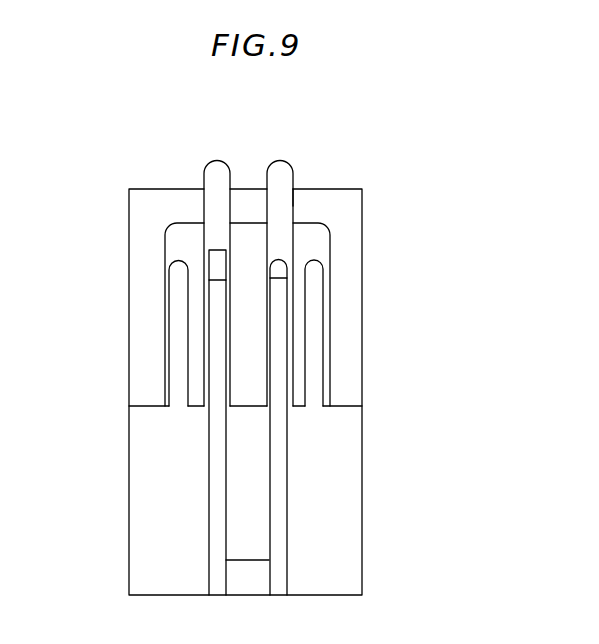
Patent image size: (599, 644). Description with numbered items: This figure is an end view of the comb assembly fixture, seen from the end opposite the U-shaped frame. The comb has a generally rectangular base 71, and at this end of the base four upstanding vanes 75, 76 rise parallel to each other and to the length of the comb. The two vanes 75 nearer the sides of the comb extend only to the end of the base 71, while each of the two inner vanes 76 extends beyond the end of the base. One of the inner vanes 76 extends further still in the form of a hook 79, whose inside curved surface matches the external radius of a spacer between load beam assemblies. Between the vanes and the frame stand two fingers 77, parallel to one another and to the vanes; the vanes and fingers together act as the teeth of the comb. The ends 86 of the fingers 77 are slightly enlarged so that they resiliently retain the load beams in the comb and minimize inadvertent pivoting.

The base 71 is at (128, 547).
The fingers 77 is at (204, 162).
The ends of the fingers 86 is at (296, 182).
The outer vanes 75 is at (177, 265).
The hook 79 is at (213, 328).
The inner vanes 76 is at (277, 302).